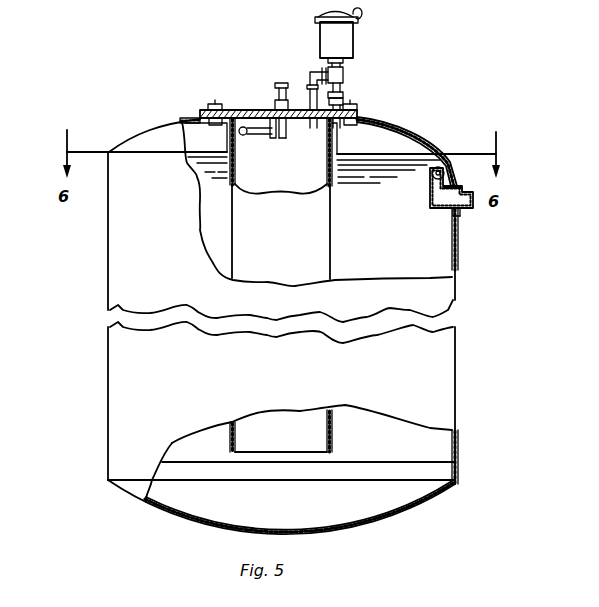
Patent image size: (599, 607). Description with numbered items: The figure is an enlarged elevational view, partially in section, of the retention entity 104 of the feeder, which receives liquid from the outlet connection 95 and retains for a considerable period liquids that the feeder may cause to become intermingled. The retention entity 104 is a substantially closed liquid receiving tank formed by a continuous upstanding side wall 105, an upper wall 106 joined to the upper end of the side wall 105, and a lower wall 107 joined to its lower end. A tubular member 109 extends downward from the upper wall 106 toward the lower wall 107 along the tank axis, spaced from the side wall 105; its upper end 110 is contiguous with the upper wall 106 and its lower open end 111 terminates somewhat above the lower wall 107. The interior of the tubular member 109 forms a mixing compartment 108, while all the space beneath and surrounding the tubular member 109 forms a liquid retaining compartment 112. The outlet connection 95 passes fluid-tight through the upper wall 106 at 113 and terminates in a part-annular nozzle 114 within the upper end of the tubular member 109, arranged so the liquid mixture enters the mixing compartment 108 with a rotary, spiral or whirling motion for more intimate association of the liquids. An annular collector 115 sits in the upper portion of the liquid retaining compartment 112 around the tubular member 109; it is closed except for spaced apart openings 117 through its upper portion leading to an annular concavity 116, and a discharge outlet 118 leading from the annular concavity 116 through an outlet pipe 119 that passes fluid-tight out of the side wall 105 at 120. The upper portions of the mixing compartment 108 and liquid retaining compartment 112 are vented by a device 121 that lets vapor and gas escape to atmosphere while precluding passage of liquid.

The outlet connection 95 is at (277, 86).
The retention entity 104 is at (86, 295).
The side wall 105 is at (443, 365).
The upper wall 106 is at (402, 127).
The lower wall 107 is at (172, 513).
The mixing compartment 108 is at (330, 185).
The tubular member 109 is at (333, 243).
The upper end 110 is at (232, 116).
The lower open end 111 is at (313, 458).
The liquid retaining compartment 112 is at (432, 447).
The fluid-tight passage 113 is at (300, 102).
The part-annular nozzle 114 is at (256, 135).
The annular collector 115 is at (388, 178).
The annular concavity 116 is at (445, 176).
The spaced apart openings 117 is at (433, 155).
The discharge outlet 118 is at (438, 201).
The outlet pipe 119 is at (461, 212).
The fluid-tight passage 120 is at (458, 238).
The venting device 121 is at (344, 69).